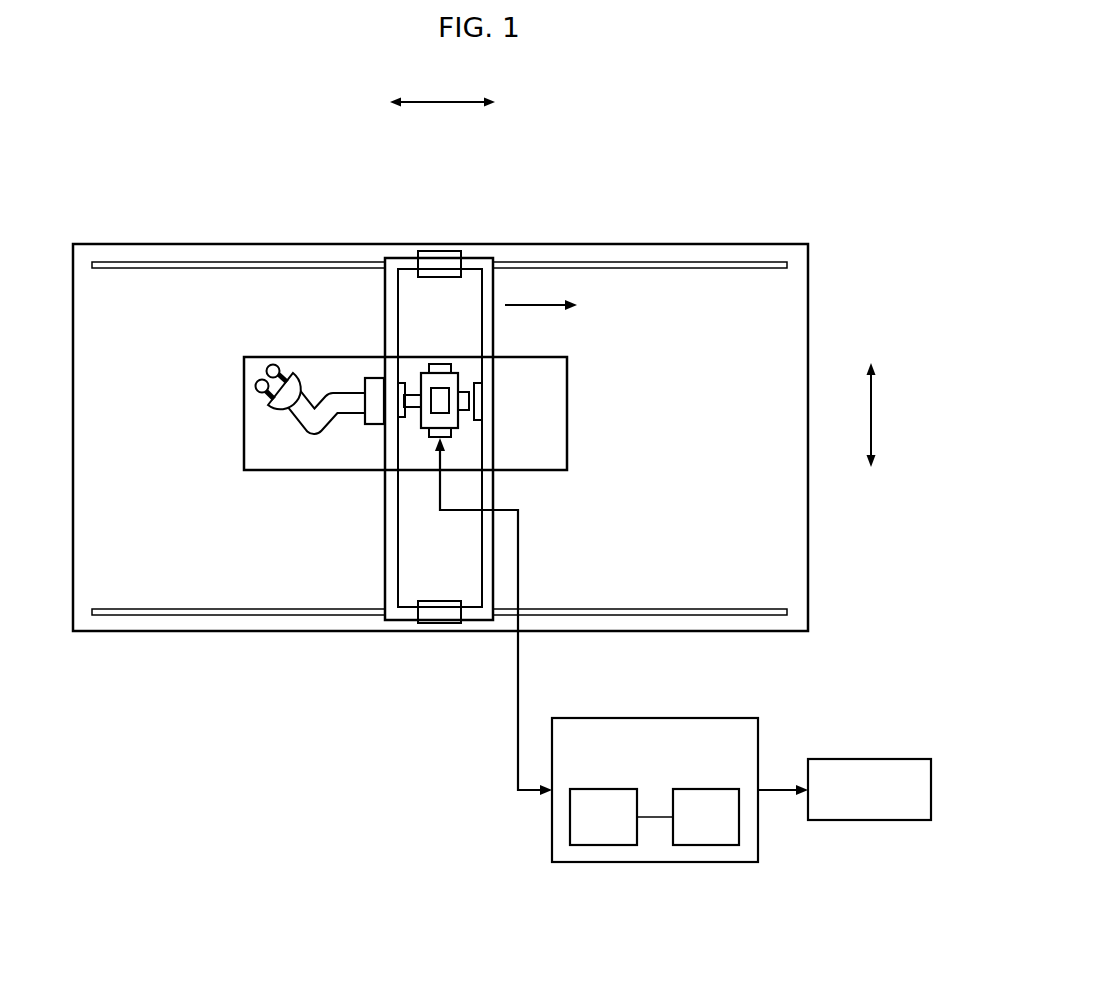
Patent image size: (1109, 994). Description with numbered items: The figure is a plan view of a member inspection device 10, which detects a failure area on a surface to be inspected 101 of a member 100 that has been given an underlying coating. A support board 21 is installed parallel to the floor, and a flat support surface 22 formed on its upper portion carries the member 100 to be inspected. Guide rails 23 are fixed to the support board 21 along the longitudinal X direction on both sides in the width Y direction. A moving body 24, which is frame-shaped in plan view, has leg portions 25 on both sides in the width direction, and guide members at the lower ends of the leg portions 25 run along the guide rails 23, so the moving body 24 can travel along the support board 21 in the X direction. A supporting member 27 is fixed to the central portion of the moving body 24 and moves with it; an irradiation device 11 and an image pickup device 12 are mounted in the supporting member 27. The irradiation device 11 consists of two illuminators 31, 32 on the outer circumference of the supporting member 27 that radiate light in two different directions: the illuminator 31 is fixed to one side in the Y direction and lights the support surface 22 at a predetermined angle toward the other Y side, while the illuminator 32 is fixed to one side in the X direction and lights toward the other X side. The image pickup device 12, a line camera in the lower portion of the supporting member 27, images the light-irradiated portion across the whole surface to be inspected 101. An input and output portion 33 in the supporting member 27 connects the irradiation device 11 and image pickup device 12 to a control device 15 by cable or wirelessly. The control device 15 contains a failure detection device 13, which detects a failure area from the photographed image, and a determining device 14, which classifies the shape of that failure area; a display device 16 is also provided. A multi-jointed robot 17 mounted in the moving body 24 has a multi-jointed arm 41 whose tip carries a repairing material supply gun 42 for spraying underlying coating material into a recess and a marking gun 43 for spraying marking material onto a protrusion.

The member inspection device 10 is at (250, 129).
The irradiation device 11 is at (407, 436).
The image pickup device 12 is at (441, 401).
The failure detection device 13 is at (598, 789).
The determining device 14 is at (700, 789).
The control device 15 is at (655, 774).
The display device 16 is at (877, 759).
The multi-jointed robot 17 is at (287, 290).
The support board 21 is at (820, 284).
The support surface 22 is at (736, 420).
The guide rails 23 is at (766, 262).
The moving body 24 is at (373, 547).
The leg portions 25 is at (430, 251).
The supporting member 27 is at (425, 363).
The illuminator 31 is at (440, 362).
The illuminator 32 is at (465, 387).
The input and output portion 33 is at (407, 436).
The multi-jointed arm 41 is at (250, 297).
The repairing material supply gun 42 is at (260, 380).
The marking gun 43 is at (272, 364).
The member 100 is at (558, 338).
The surface to be inspected 101 is at (545, 432).